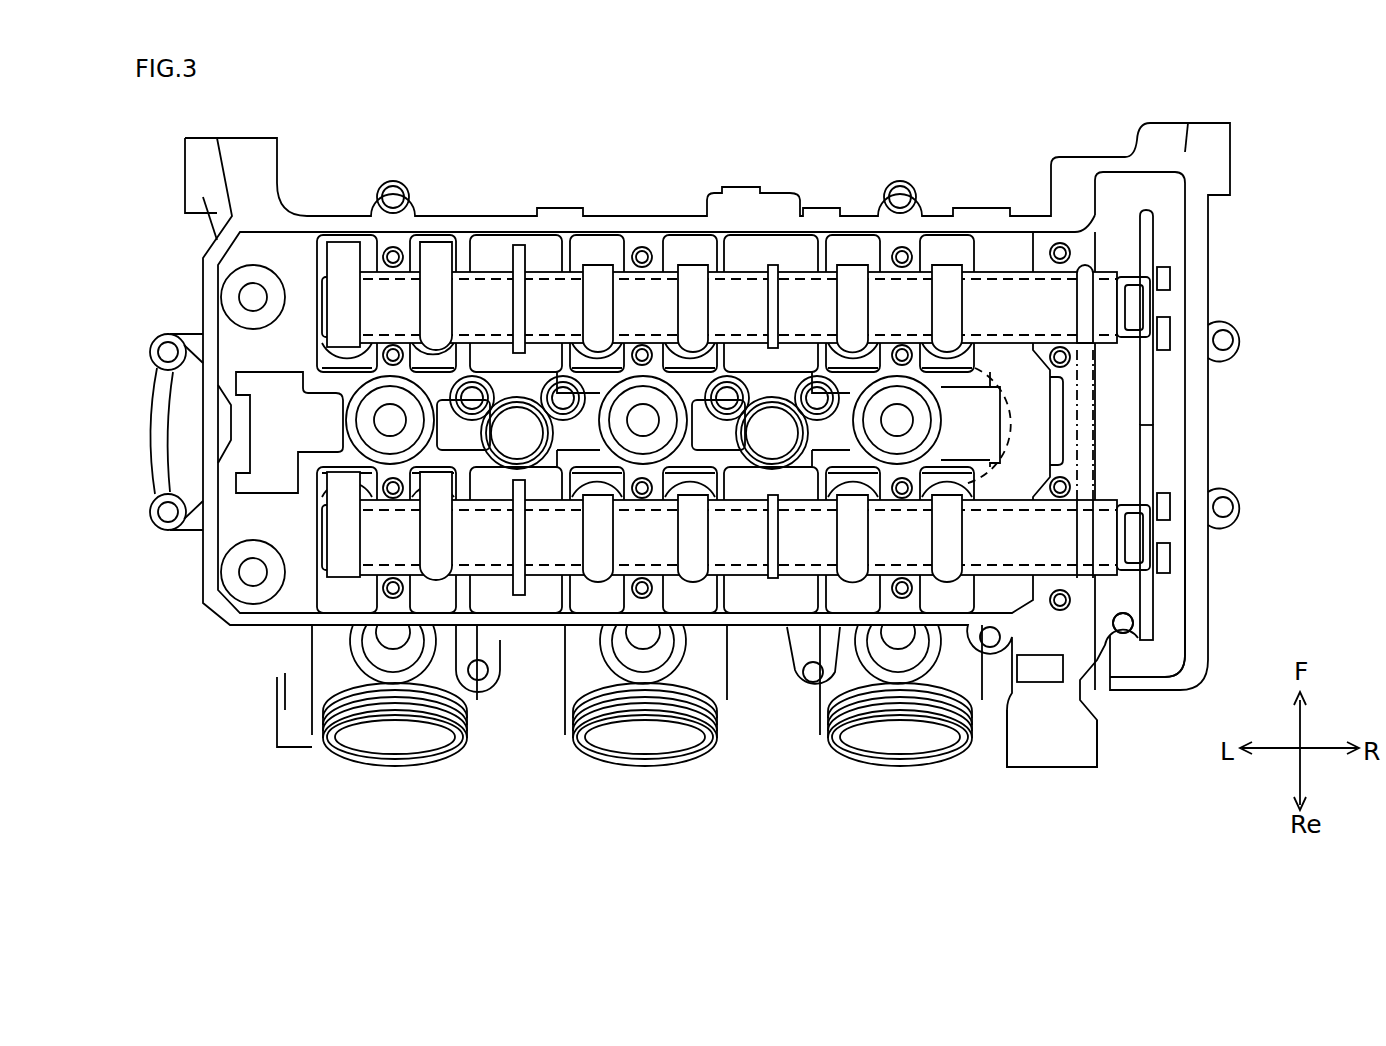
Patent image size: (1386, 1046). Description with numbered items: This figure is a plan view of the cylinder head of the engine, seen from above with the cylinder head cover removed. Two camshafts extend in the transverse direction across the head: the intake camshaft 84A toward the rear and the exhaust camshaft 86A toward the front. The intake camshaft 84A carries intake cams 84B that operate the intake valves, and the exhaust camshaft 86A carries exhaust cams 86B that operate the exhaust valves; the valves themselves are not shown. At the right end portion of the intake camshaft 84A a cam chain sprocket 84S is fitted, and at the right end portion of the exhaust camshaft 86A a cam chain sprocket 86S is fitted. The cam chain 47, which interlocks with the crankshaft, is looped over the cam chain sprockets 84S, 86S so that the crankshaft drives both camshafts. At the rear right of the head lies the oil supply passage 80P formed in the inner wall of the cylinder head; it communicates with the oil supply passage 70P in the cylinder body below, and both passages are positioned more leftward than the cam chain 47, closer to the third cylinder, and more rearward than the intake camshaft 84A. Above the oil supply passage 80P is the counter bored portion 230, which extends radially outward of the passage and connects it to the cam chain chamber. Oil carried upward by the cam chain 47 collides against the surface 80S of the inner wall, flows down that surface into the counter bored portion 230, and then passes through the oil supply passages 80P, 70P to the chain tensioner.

The exhaust cam 86B is at (436, 262).
The exhaust camshaft 86A is at (737, 303).
The cam chain sprocket 86S is at (1148, 233).
The cam chain 47 is at (1160, 437).
The cam chain sprocket 84S is at (1147, 598).
The intake camshaft 84A is at (747, 533).
The intake cam 84B is at (350, 488).
The surface of the inner wall 80S is at (1163, 657).
The oil supply passage 80P is at (1115, 633).
The oil supply passage 70P is at (1115, 633).
The counter bored portion 230 is at (1103, 633).